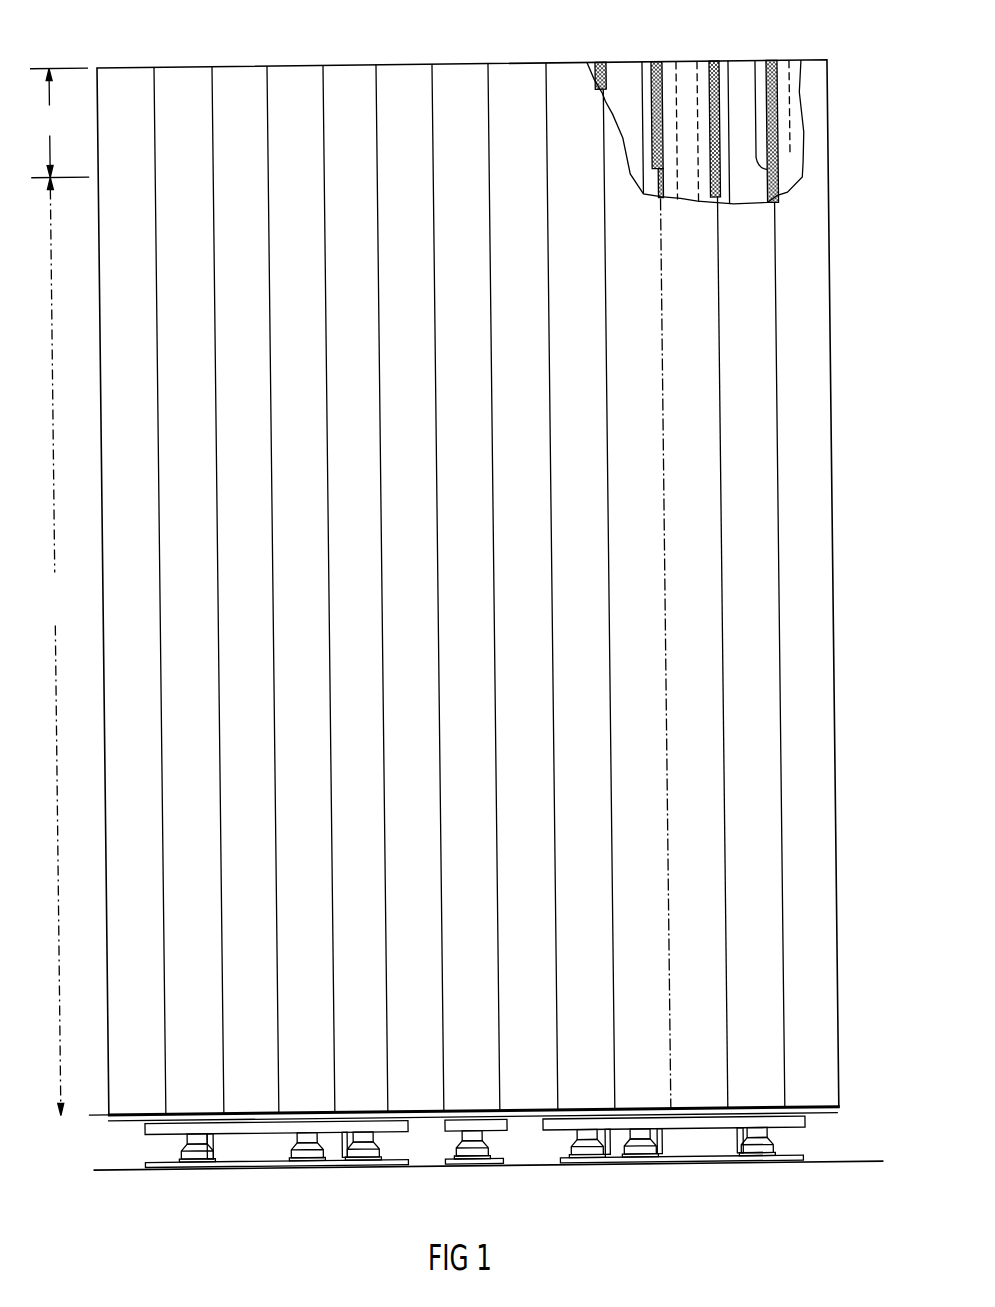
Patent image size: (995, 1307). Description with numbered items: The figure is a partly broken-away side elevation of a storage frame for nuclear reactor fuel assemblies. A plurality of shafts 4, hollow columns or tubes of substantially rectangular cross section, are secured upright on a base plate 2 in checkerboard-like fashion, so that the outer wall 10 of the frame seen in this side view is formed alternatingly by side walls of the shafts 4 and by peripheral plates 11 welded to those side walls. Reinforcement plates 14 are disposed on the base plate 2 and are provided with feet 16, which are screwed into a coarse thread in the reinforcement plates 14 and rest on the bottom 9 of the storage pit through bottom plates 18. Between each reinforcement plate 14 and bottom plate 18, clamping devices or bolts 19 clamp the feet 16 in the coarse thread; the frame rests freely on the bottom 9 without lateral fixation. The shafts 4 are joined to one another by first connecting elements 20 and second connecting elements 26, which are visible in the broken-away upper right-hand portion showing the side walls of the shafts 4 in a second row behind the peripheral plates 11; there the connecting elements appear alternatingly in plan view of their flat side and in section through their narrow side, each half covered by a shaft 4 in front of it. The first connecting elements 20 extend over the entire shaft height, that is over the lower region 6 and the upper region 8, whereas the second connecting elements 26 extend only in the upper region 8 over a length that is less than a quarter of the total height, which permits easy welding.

The base plate 2 is at (837, 1110).
The shafts 4 is at (792, 93).
The lower region 6 is at (75, 772).
The upper region 8 is at (86, 157).
The bottom 9 is at (833, 1162).
The outer wall 10 is at (830, 488).
The peripheral plates 11 is at (643, 767).
The reinforcement plates 14 is at (790, 1120).
The feet 16 is at (758, 1147).
The bottom plates 18 is at (678, 1167).
The clamping devices 19 is at (208, 1155).
The first connecting elements 20 is at (610, 62).
The second connecting elements 26 is at (610, 83).